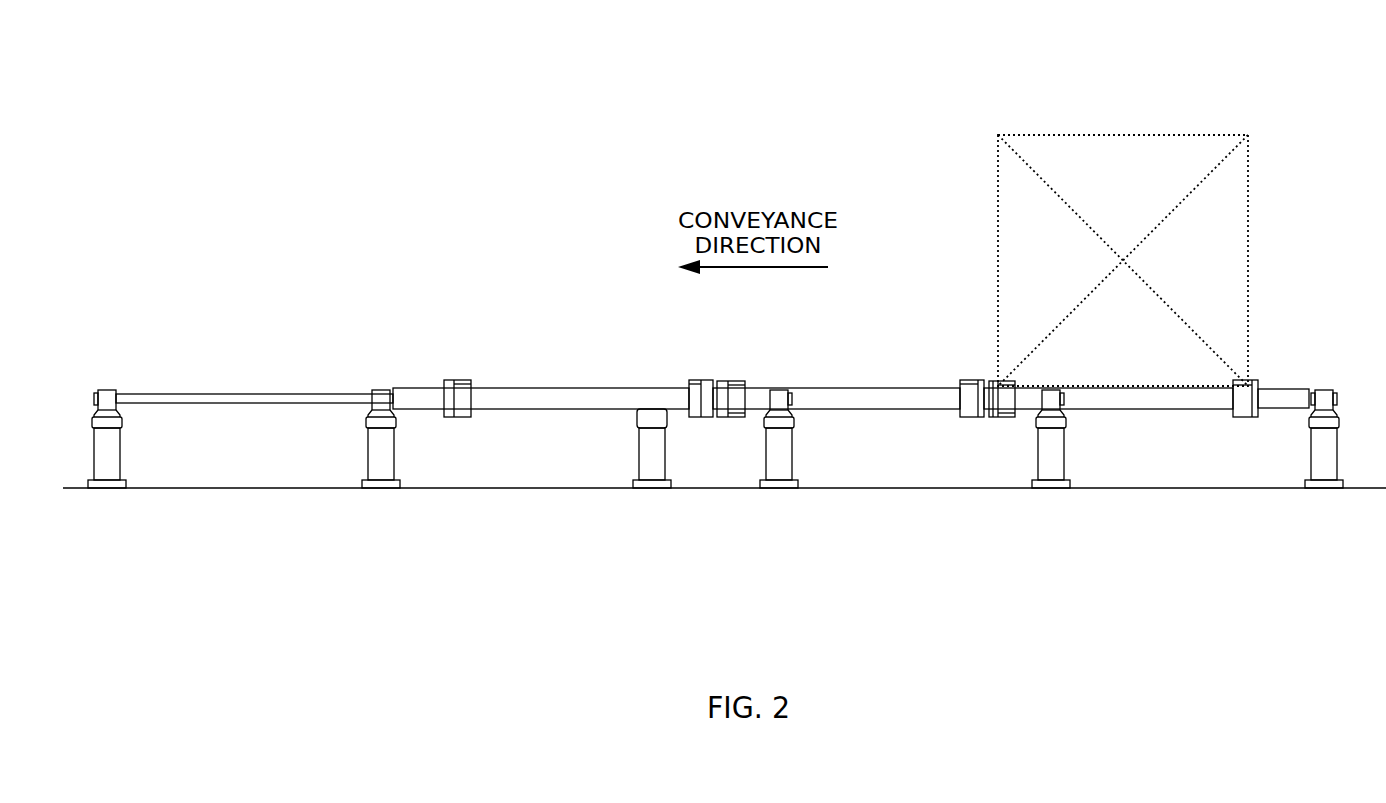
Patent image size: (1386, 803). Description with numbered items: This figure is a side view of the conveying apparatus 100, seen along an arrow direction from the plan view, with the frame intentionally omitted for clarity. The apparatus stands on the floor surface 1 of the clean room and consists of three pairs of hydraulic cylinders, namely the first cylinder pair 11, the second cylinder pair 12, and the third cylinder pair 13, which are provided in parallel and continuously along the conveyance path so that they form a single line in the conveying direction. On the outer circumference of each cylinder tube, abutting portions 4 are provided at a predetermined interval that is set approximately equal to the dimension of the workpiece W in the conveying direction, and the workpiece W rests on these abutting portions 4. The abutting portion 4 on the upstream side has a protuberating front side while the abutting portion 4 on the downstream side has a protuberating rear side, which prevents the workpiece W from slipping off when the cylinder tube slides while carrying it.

The floor surface 1 is at (1366, 488).
The abutting portion 4 is at (458, 417).
The first cylinder pair 11 is at (1142, 400).
The second cylinder pair 12 is at (855, 400).
The third cylinder pair 13 is at (578, 400).
The conveying apparatus 100 is at (865, 100).
The workpiece W is at (1078, 135).